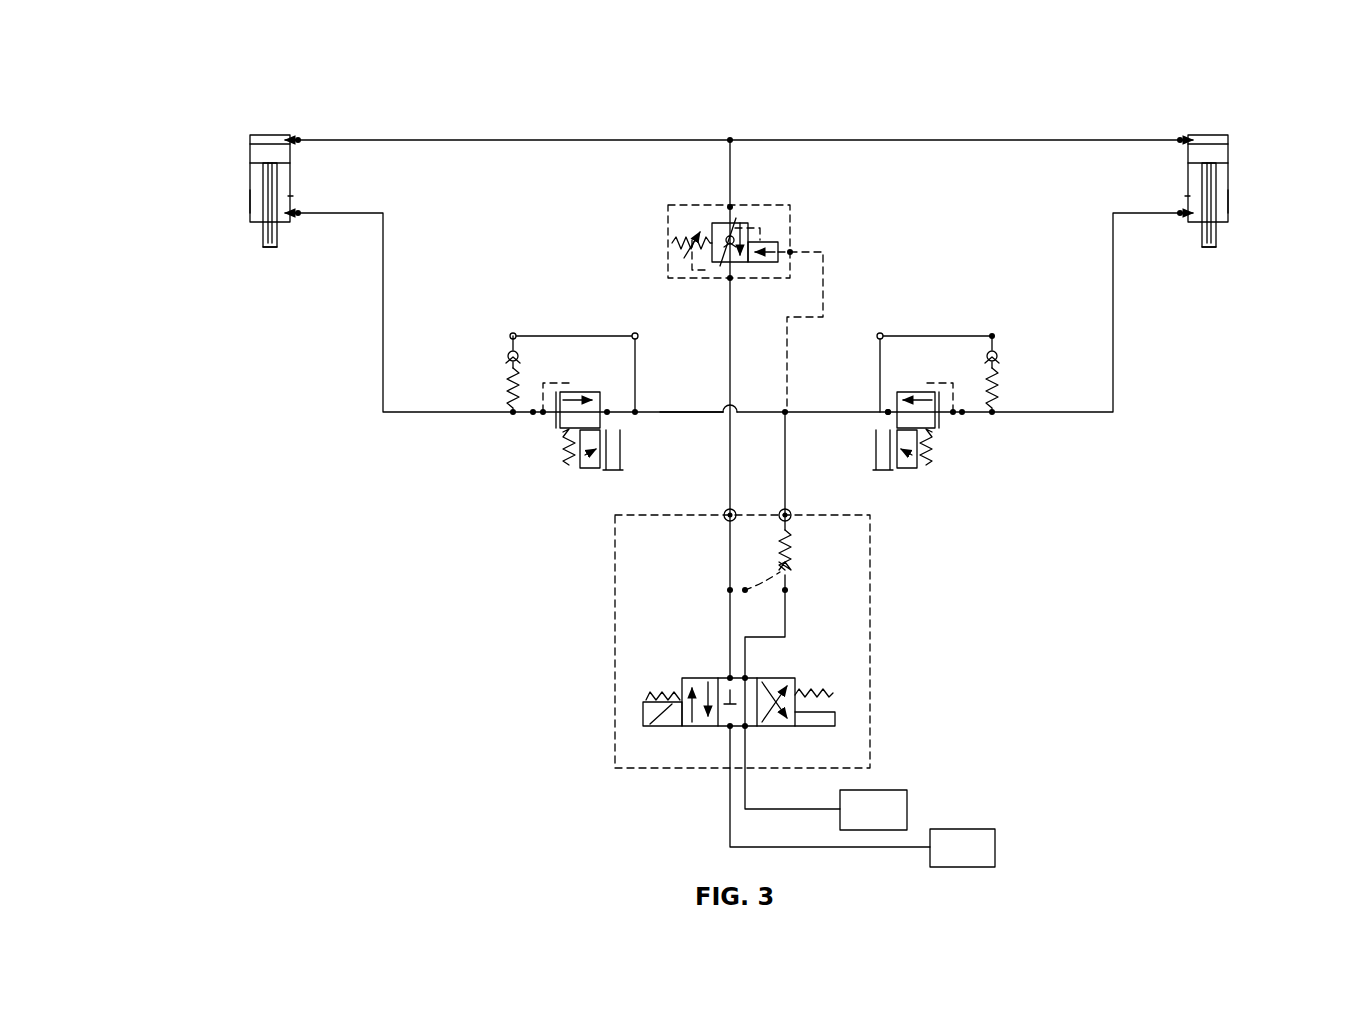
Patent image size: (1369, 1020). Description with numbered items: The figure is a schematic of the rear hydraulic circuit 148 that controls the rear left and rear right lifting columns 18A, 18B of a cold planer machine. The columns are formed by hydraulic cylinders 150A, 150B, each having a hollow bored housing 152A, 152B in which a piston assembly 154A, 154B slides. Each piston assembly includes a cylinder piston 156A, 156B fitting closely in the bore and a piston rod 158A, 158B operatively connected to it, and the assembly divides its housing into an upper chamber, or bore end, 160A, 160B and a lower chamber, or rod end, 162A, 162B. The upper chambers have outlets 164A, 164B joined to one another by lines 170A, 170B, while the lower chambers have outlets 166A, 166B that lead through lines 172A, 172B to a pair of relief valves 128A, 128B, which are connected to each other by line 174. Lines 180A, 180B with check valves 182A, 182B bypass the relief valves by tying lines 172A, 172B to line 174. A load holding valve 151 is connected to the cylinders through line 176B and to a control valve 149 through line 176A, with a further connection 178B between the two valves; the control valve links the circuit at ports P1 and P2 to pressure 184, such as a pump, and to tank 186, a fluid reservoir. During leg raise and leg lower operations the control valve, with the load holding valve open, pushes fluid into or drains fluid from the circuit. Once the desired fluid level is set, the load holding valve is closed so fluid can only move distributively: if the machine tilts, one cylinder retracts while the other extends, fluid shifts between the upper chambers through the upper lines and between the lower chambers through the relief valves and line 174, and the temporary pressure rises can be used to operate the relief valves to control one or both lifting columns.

The rear left lifting column 18A is at (261, 181).
The rear right lifting column 18B is at (1205, 178).
The rear hydraulic circuit 148 is at (770, 72).
The control valve 149 is at (640, 675).
The hydraulic cylinder 150A is at (248, 150).
The hydraulic cylinder 150B is at (1230, 150).
The load holding valve 151 is at (755, 200).
The housing 152A is at (258, 205).
The housing 152B is at (1225, 135).
The piston assembly 154A is at (290, 196).
The piston assembly 154B is at (1185, 196).
The cylinder piston 156A is at (255, 160).
The cylinder piston 156B is at (1218, 160).
The piston rod 158A is at (268, 250).
The piston rod 158B is at (1210, 250).
The upper chamber 160A is at (268, 135).
The upper chamber 160B is at (1212, 135).
The lower chamber 162A is at (258, 212).
The lower chamber 162B is at (1220, 208).
The outlet 164A is at (292, 138).
The outlet 164B is at (1188, 138).
The outlet 166A is at (292, 218).
The outlet 166B is at (1190, 218).
The line 170A is at (612, 140).
The line 170B is at (930, 140).
The line 172A is at (383, 365).
The line 172B is at (1113, 380).
The line 174 is at (680, 412).
The line 176A is at (787, 452).
The line 176B is at (727, 163).
The line 178B is at (826, 282).
The line 180A is at (580, 336).
The line 180B is at (935, 336).
The check valve 182A is at (508, 378).
The check valve 182B is at (997, 388).
The relief valve 128A is at (560, 478).
The relief valve 128B is at (930, 478).
The pressure 184 is at (997, 848).
The tank 186 is at (908, 808).
The first port P1 is at (802, 501).
The second port P2 is at (710, 501).